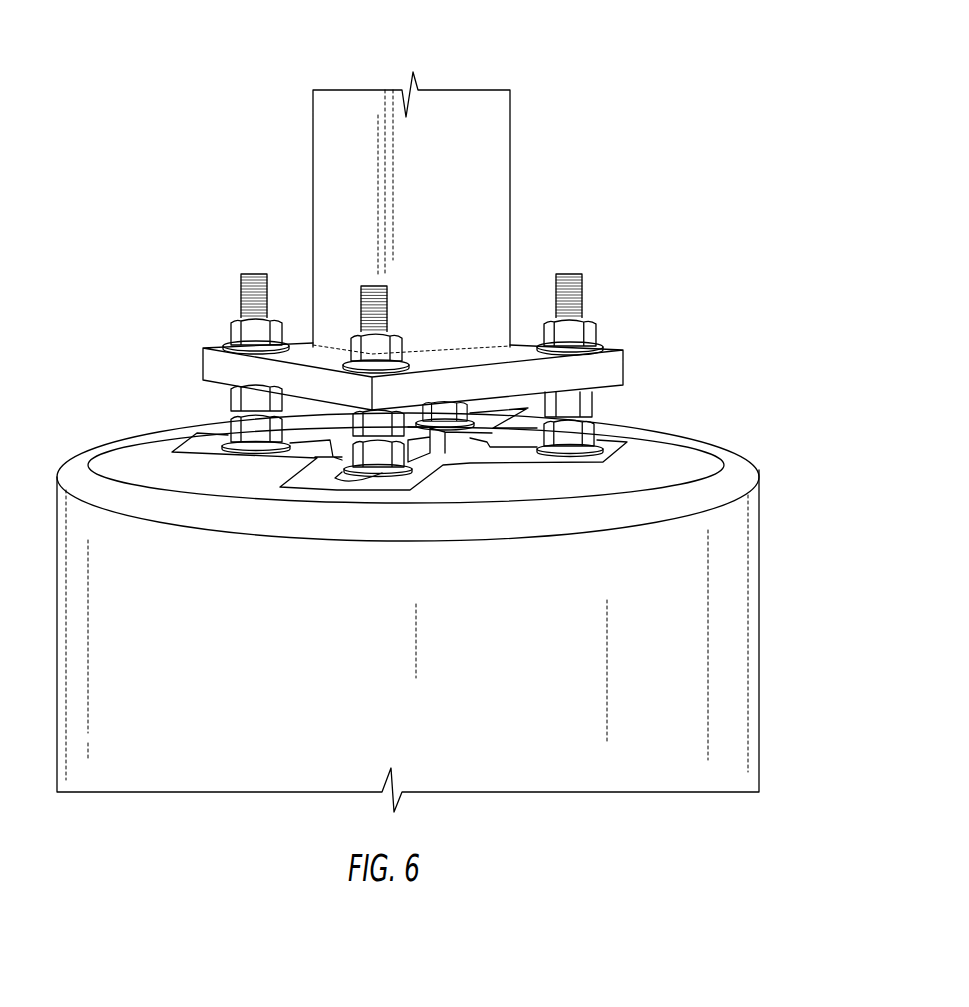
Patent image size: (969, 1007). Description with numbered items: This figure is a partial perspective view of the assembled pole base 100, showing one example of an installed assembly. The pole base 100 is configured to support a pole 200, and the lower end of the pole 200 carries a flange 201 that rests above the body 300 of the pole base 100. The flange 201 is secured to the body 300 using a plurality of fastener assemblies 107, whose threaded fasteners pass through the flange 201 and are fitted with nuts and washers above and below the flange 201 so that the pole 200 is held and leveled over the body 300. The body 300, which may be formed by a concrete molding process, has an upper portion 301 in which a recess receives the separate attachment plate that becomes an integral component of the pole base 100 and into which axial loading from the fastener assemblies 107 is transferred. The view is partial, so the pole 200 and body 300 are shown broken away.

The pole base 100 is at (657, 113).
The fastener assembly 107 is at (220, 397).
The pole 200 is at (503, 190).
The flange 201 is at (277, 373).
The body 300 is at (623, 722).
The upper portion 301 is at (667, 543).